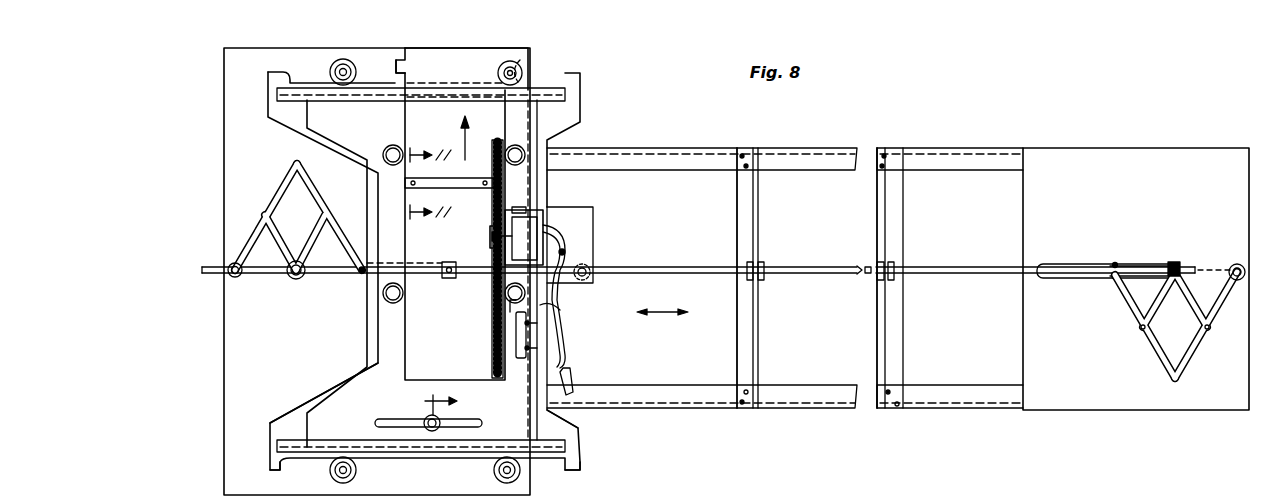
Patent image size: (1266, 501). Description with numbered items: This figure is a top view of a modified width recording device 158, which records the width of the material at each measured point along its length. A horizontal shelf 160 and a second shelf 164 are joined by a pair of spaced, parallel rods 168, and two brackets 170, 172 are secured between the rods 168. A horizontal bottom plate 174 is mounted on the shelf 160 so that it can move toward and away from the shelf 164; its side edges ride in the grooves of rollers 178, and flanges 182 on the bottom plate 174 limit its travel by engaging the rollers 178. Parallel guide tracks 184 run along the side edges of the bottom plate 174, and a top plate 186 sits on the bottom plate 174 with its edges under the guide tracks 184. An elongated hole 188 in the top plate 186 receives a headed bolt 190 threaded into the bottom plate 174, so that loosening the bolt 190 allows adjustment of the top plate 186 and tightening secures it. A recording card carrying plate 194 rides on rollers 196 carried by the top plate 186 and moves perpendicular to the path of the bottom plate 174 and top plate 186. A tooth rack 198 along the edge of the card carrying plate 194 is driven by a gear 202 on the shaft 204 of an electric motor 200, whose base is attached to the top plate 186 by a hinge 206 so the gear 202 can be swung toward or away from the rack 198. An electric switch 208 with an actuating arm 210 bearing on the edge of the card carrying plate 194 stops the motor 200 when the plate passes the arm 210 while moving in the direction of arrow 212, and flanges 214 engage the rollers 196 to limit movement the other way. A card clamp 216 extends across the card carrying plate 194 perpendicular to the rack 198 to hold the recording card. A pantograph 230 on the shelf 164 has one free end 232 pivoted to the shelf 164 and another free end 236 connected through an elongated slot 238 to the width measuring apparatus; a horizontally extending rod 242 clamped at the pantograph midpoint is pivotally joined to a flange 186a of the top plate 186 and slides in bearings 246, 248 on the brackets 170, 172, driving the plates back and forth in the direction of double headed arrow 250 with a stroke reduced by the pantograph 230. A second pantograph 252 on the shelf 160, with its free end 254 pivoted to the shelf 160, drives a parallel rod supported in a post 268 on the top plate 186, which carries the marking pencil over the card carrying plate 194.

The recording device 158 is at (940, 133).
The horizontal shelf 160 is at (226, 341).
The shelf 164 is at (1190, 150).
The rods 168 is at (683, 150).
The bracket 170 is at (884, 206).
The bracket 172 is at (756, 204).
The bottom plate 174 is at (290, 410).
The rollers 178 is at (345, 62).
The flanges 182 is at (270, 465).
The guide tracks 184 is at (565, 93).
The top plate 186 is at (365, 376).
The flange 186a is at (588, 253).
The elongated hole 188 is at (386, 419).
The headed bolt 190 is at (438, 422).
The recording card carrying plate 194 is at (465, 70).
The rollers 196 is at (393, 148).
The tooth rack 198 is at (490, 326).
The electric motor 200 is at (593, 233).
The gear 202 is at (497, 240).
The shaft 204 is at (507, 240).
The hinge 206 is at (524, 212).
The electric switch 208 is at (556, 347).
The actuating arm 210 is at (514, 345).
The arrow 212 is at (463, 136).
The flanges 214 is at (401, 60).
The card clamp 216 is at (455, 190).
The pantograph 230 is at (1183, 368).
The free end 232 is at (1232, 265).
The free end 236 is at (1118, 279).
The elongated slot 238 is at (1085, 262).
The horizontally extending rod 242 is at (942, 278).
The bearing 246 is at (890, 268).
The bearing 248 is at (762, 268).
The double headed arrow 250 is at (665, 313).
The pantograph 252 is at (280, 182).
The free end 254 is at (232, 263).
The post 268 is at (490, 278).